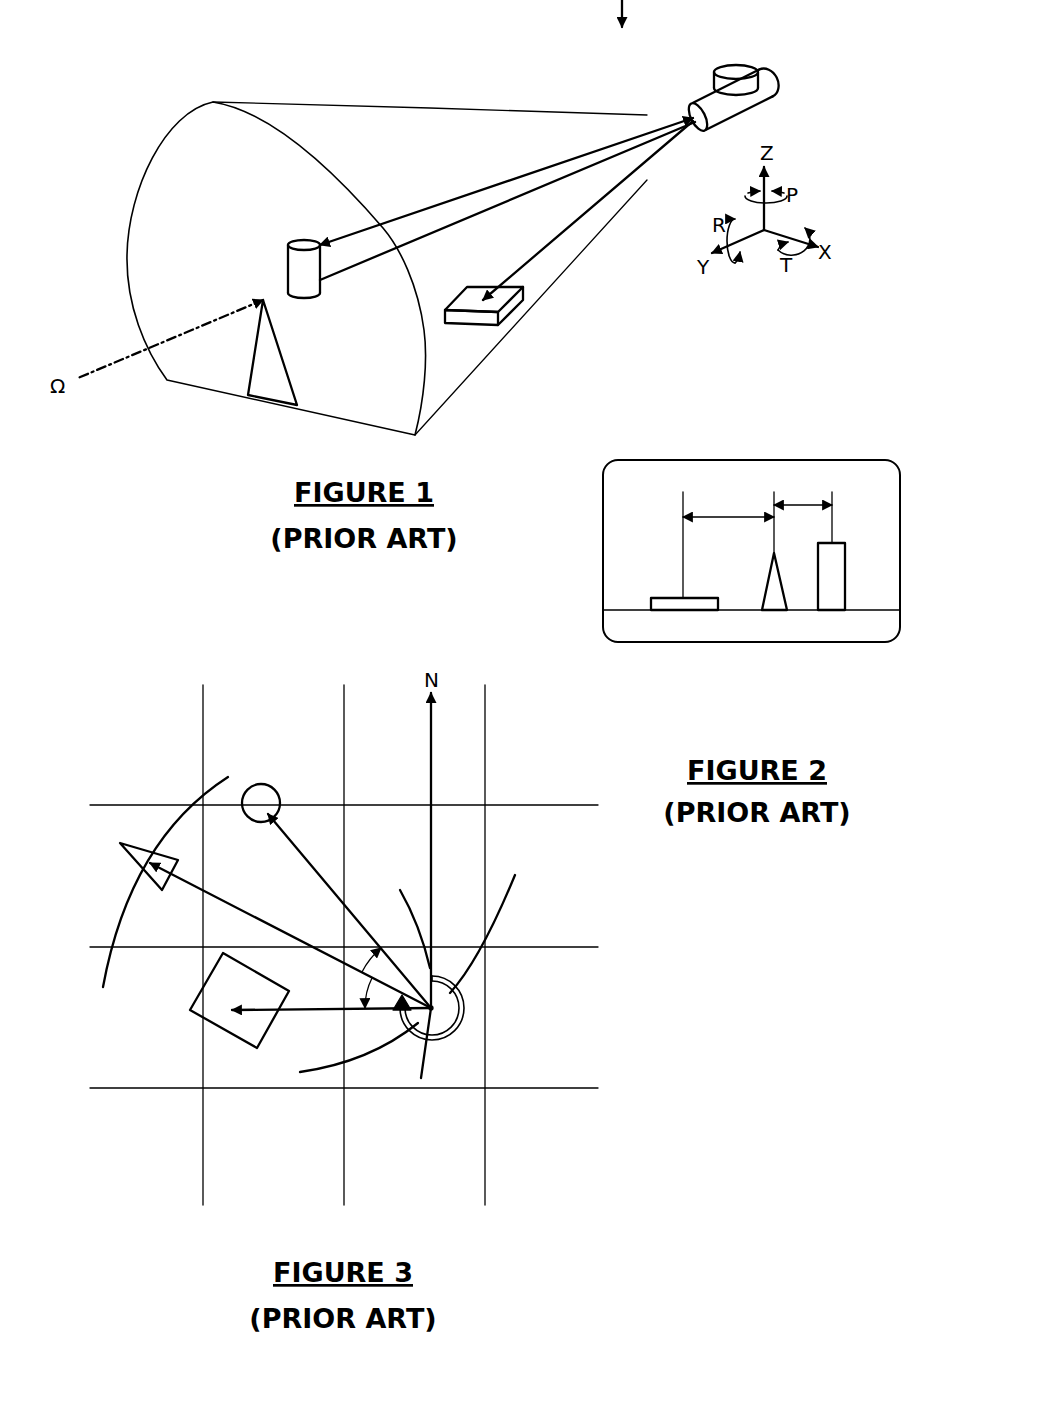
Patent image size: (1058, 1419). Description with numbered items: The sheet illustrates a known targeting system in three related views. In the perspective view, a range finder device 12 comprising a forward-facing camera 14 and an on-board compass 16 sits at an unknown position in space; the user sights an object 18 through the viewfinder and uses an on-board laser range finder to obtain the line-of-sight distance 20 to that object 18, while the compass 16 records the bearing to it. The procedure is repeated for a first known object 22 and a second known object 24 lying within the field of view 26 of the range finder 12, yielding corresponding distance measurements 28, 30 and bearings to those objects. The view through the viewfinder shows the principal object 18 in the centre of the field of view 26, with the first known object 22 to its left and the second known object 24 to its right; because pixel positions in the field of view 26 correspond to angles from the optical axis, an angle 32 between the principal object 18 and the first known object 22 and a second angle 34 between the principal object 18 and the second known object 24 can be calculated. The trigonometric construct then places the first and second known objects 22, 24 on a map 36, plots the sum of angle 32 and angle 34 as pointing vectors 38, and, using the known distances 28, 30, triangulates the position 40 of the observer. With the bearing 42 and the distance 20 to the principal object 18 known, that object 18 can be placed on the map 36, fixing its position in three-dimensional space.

In FIG. 1, the range finder device 12 is at (777, 90).
In FIG. 1, the forward-facing camera 14 is at (729, 112).
In FIG. 1, the on-board compass 16 is at (737, 72).
In FIG. 1, the object 18 is at (272, 387).
In FIG. 2, the object 18 is at (775, 603).
In FIG. 3, the object 18 is at (125, 843).
In FIG. 1, the line-of-sight distance 20 is at (422, 236).
In FIG. 3, the line-of-sight distance 20 is at (215, 780).
In FIG. 1, the first known object 22 is at (483, 322).
In FIG. 2, the first known object 22 is at (685, 603).
In FIG. 3, the first known object 22 is at (220, 1025).
In FIG. 1, the second known object 24 is at (303, 283).
In FIG. 2, the second known object 24 is at (828, 600).
In FIG. 3, the second known object 24 is at (262, 788).
In FIG. 1, the field of view 26 is at (167, 108).
In FIG. 2, the field of view 26 is at (832, 458).
In FIG. 1, the distance measurement 28 is at (553, 240).
In FIG. 3, the distance measurement 28 is at (425, 1068).
In FIG. 1, the distance measurement 30 is at (482, 188).
In FIG. 3, the distance measurement 30 is at (510, 915).
In FIG. 2, the angle 32 is at (728, 501).
In FIG. 3, the angle 32 is at (356, 992).
In FIG. 2, the second angle 34 is at (803, 490).
In FIG. 3, the second angle 34 is at (360, 958).
In FIG. 3, the map 36 is at (344, 945).
In FIG. 3, the pointing vectors 38 is at (320, 877).
In FIG. 3, the position of the observer 40 is at (463, 993).
In FIG. 3, the bearing 42 is at (457, 1025).